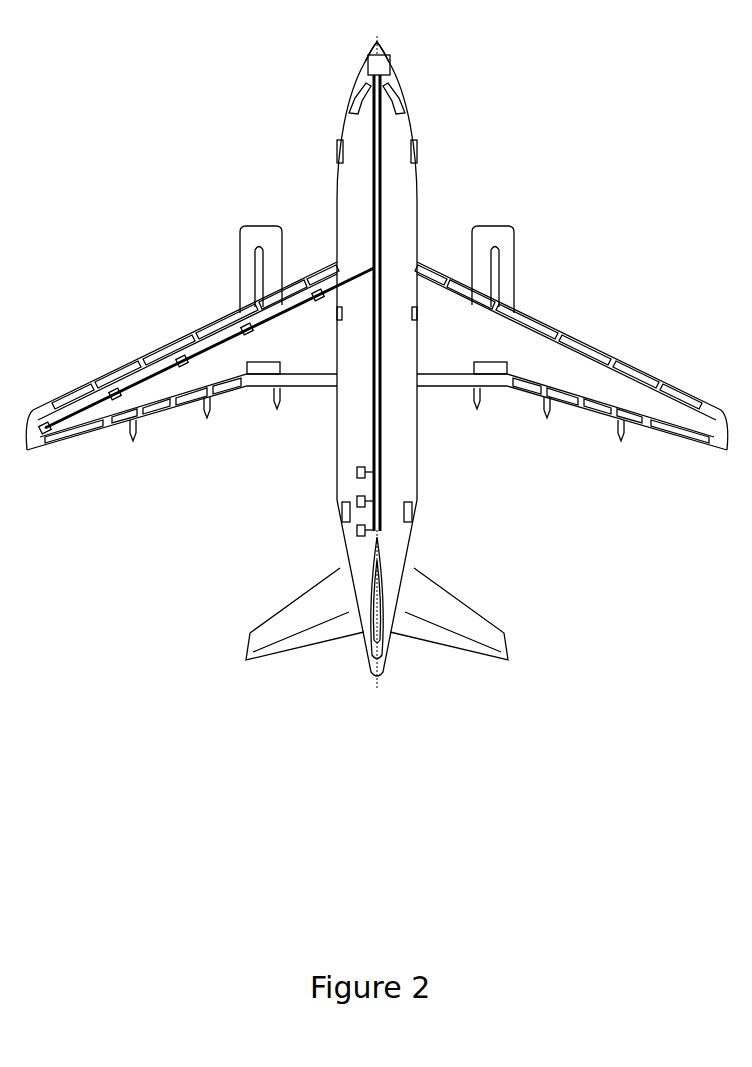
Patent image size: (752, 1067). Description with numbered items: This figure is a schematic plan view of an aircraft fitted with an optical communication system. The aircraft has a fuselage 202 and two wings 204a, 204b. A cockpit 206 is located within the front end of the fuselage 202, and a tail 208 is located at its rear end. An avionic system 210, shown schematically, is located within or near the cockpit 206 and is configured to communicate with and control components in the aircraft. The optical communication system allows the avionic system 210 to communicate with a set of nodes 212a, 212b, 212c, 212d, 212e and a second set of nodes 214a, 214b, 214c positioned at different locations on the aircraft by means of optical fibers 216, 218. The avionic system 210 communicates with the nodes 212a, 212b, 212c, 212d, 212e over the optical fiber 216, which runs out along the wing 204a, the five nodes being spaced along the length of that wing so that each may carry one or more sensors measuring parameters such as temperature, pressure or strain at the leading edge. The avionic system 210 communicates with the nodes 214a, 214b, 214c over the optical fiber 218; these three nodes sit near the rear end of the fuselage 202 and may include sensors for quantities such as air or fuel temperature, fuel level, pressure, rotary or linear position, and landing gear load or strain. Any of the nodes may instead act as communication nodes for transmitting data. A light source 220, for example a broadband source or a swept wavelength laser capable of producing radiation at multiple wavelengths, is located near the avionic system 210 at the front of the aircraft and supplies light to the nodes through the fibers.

The fuselage 202 is at (420, 197).
The wing 204a is at (268, 352).
The wing 204b is at (637, 400).
The cockpit 206 is at (367, 60).
The tail 208 is at (380, 593).
The avionic system 210 is at (400, 78).
The node 212a is at (317, 290).
The node 212b is at (247, 322).
The node 212c is at (182, 354).
The node 212d is at (115, 388).
The node 212e is at (47, 422).
The node 214a is at (357, 473).
The node 214b is at (357, 502).
The node 214c is at (357, 532).
The optical fiber 216 is at (372, 182).
The optical fiber 218 is at (385, 233).
The light source 220 is at (384, 62).